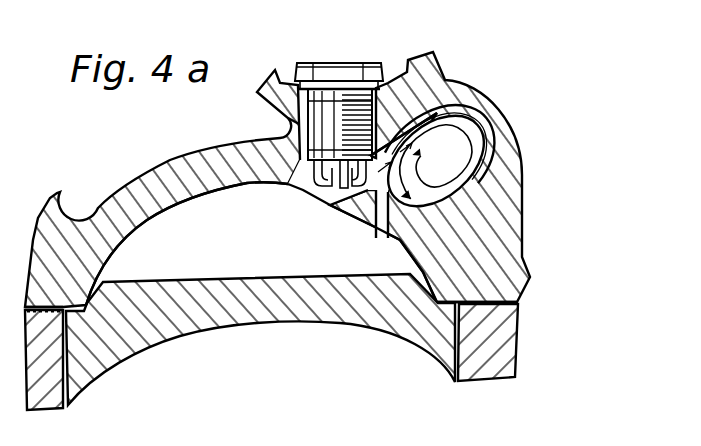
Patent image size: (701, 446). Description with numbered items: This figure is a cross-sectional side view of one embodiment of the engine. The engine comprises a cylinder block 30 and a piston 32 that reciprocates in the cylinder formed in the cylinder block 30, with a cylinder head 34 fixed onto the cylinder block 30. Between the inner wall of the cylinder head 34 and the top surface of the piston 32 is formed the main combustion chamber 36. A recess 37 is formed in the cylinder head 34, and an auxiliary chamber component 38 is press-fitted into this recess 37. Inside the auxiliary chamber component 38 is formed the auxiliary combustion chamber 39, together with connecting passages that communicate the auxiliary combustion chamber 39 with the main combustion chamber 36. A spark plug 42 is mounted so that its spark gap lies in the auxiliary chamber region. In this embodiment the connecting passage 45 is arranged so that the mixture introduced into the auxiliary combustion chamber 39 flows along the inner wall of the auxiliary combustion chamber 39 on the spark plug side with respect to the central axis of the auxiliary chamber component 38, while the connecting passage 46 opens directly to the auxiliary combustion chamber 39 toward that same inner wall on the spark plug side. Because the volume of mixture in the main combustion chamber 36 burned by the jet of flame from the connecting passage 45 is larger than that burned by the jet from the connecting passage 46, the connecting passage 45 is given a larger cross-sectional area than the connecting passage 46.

The cylinder block 30 is at (490, 353).
The piston 32 is at (412, 325).
The cylinder head 34 is at (107, 203).
The main combustion chamber 36 is at (220, 259).
The recess 37 is at (425, 107).
The auxiliary chamber component 38 is at (470, 122).
The auxiliary combustion chamber 39 is at (444, 175).
The spark plug 42 is at (278, 117).
The connecting passage 45 is at (340, 196).
The connecting passage 46 is at (383, 232).